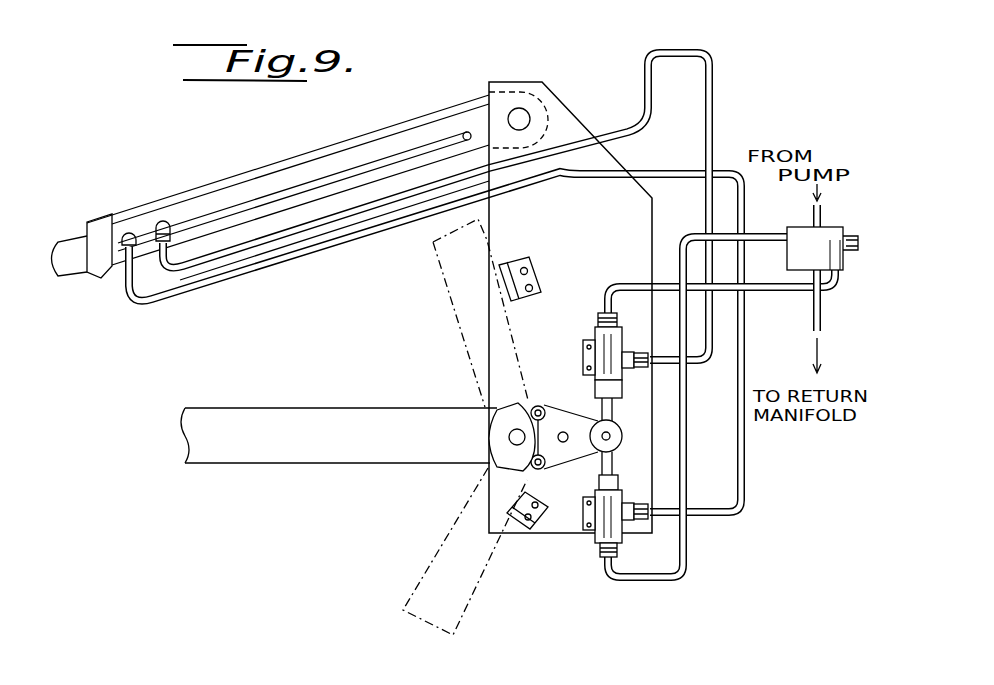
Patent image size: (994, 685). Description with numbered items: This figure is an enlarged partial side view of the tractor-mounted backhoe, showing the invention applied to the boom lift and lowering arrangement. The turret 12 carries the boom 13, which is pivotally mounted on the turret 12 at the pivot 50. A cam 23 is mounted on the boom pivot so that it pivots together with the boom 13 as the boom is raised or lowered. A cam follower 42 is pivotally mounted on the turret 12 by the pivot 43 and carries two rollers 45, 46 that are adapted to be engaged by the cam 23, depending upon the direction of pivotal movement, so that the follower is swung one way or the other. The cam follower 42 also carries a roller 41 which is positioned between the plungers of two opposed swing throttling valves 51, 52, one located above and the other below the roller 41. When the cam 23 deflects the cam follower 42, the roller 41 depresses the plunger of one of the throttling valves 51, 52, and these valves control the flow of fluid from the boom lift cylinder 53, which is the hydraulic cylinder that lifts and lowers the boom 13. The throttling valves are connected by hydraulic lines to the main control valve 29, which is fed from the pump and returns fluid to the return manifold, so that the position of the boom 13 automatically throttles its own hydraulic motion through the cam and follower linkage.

The turret 12 is at (556, 115).
The boom 13 is at (235, 450).
The cam 23 is at (482, 452).
The main control valve 29 is at (800, 251).
The roller 41 is at (617, 424).
The cam follower 42 is at (568, 450).
The pivot 43 is at (563, 431).
The roller 45 is at (536, 407).
The roller 46 is at (542, 470).
The boom pivot 50 is at (510, 430).
The swing throttling valve 51 is at (603, 339).
The swing throttling valve 52 is at (608, 525).
The boom lift cylinder 53 is at (168, 208).